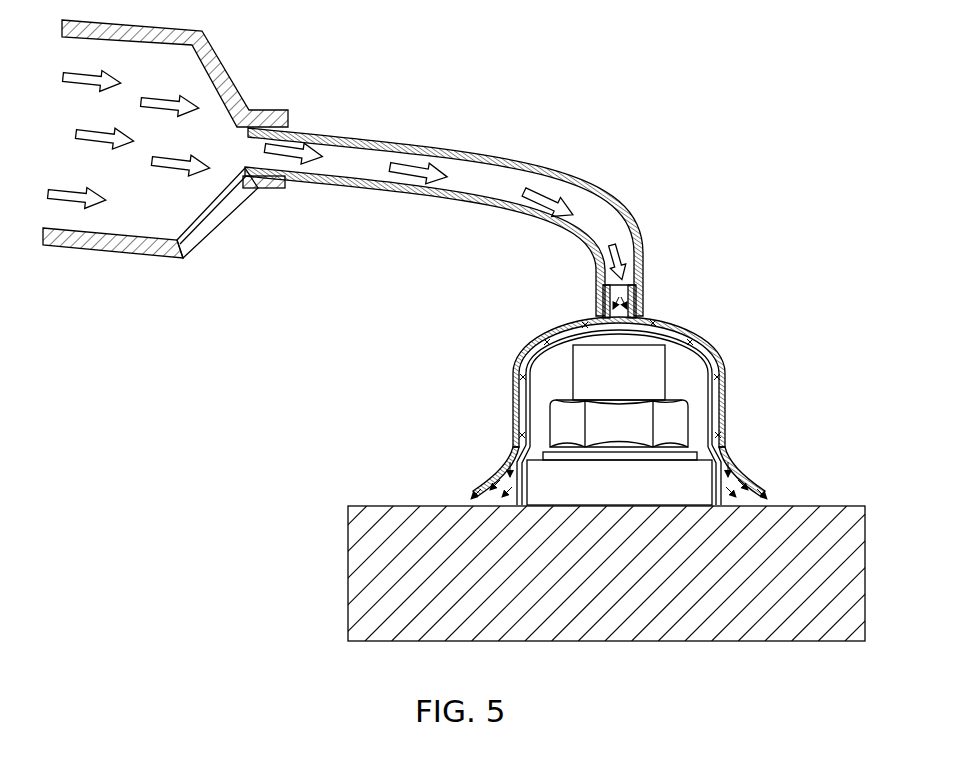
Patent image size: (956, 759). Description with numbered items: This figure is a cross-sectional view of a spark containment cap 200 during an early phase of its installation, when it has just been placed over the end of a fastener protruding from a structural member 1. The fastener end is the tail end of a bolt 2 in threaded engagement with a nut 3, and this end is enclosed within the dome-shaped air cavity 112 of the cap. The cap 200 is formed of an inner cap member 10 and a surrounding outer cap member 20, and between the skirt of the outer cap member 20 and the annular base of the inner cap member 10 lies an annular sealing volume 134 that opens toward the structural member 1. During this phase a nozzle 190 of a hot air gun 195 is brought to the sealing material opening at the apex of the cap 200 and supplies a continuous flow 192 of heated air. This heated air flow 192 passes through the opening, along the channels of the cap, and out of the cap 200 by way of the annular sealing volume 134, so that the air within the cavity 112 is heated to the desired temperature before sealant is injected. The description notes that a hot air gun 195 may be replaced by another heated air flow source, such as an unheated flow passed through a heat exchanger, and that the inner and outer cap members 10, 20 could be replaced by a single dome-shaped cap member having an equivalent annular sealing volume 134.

The structural member 1 is at (405, 505).
The bolt 2 is at (592, 372).
The nut 3 is at (567, 427).
The inner cap member 10 is at (707, 348).
The outer cap member 20 is at (673, 326).
The air cavity 112 is at (702, 389).
The annular sealing volume 134 is at (738, 480).
The nozzle 190 is at (566, 186).
The flow of heated air 192 is at (410, 170).
The hot air gun 195 is at (214, 50).
The spark containment cap 200 is at (653, 392).